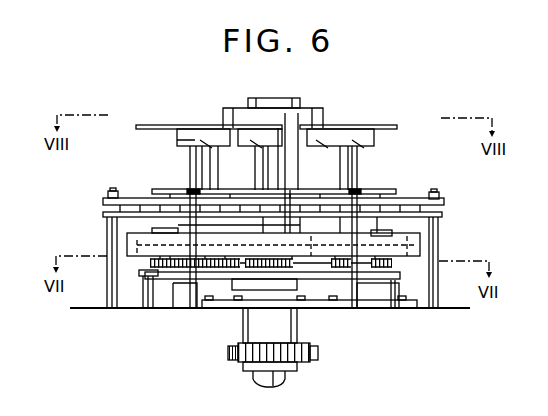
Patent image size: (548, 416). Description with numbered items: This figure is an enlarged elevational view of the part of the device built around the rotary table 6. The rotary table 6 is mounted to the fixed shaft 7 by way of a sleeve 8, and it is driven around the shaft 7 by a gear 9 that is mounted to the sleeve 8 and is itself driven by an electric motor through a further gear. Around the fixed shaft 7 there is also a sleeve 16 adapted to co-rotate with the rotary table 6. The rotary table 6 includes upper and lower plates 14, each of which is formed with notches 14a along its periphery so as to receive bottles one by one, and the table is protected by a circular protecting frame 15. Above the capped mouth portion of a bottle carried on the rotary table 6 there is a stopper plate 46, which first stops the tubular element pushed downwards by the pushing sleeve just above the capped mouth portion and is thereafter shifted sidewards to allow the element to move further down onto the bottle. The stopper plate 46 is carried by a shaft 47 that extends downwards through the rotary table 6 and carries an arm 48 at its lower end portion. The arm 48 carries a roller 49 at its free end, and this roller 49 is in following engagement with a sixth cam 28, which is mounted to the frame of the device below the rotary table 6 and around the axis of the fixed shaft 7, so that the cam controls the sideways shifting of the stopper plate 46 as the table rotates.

The stopper plate 46 is at (175, 125).
The shaft 47 is at (268, 162).
The sleeve 16 is at (268, 162).
The notches 14a is at (153, 228).
The upper and lower plates 14 is at (376, 198).
The circular protecting frame 15 is at (424, 192).
The rotary table 6 is at (420, 242).
The roller 49 is at (381, 272).
The arm 48 is at (338, 279).
The sixth cam 28 is at (168, 280).
The sleeve 8 is at (243, 320).
The gear 9 is at (228, 352).
The shaft 7 is at (253, 377).